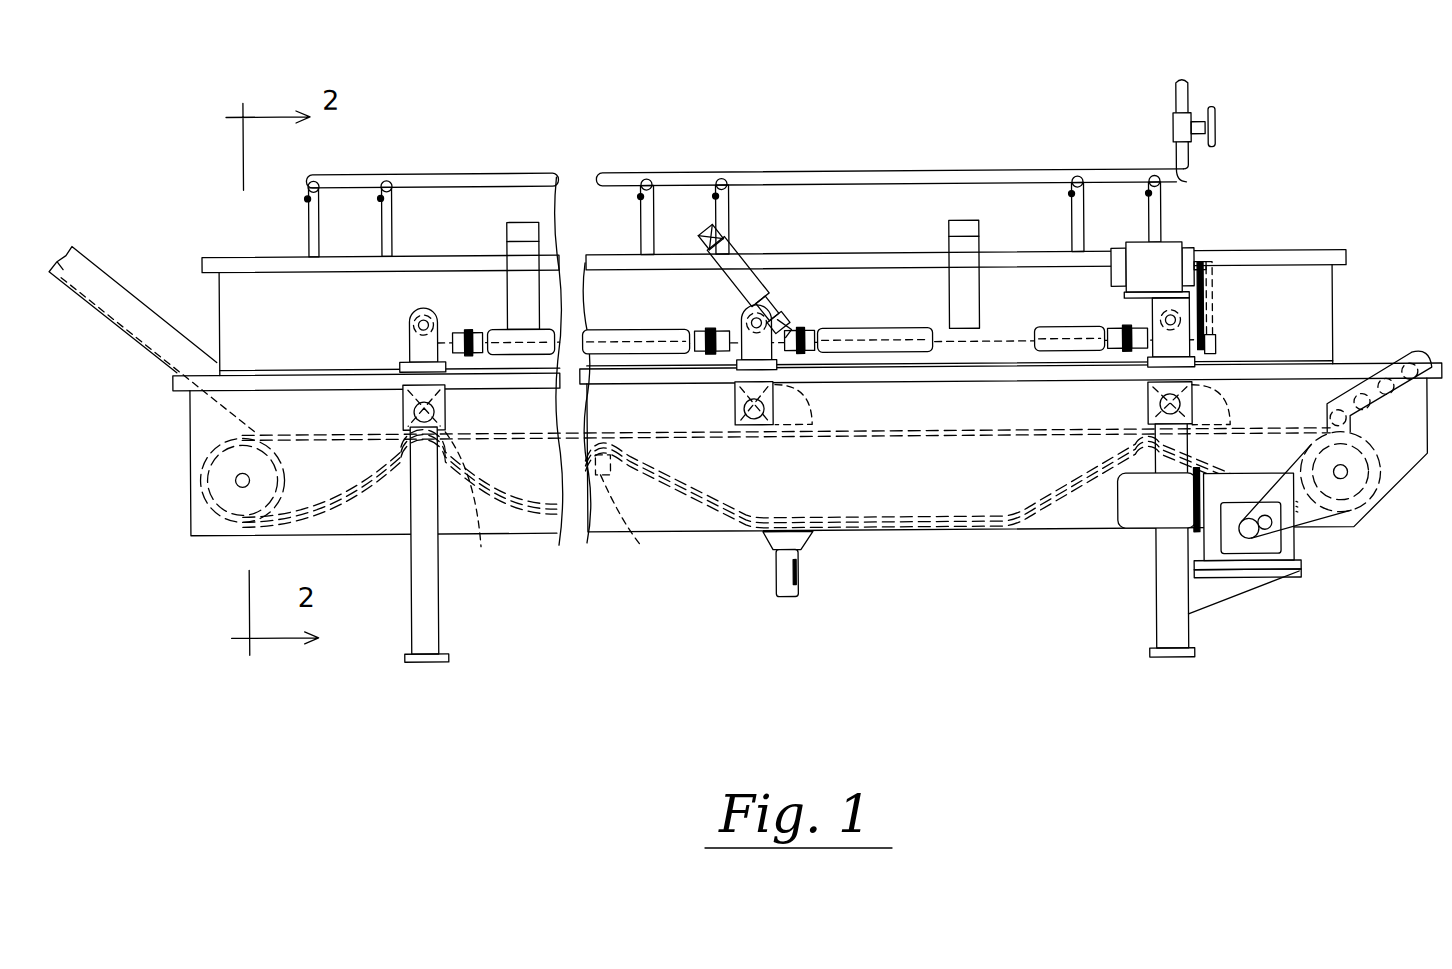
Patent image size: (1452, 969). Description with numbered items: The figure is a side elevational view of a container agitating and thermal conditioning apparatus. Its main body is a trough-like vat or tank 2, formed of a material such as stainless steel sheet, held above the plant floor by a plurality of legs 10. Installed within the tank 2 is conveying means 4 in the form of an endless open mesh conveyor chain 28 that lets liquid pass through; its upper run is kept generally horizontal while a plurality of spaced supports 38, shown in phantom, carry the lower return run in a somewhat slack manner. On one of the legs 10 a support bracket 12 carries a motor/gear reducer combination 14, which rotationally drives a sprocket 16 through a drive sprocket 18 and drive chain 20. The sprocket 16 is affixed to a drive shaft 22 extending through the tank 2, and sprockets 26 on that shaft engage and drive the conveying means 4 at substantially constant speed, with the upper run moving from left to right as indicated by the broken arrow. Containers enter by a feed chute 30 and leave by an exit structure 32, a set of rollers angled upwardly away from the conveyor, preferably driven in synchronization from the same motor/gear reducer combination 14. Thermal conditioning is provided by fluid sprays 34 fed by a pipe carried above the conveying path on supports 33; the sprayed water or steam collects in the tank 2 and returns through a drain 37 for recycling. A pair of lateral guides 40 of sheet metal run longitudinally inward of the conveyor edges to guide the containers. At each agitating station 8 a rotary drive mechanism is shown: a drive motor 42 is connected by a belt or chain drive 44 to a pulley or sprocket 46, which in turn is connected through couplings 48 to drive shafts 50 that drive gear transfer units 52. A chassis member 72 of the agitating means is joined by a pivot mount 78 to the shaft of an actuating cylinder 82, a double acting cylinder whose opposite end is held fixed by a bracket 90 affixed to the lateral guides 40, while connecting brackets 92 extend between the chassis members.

The tank 2 is at (185, 410).
The conveying means 4 is at (680, 498).
The agitating station 8 is at (722, 402).
The legs 10 is at (440, 625).
The support bracket 12 is at (1220, 604).
The motor/gear reducer combination 14 is at (1300, 545).
The sprocket 16 is at (1385, 452).
The drive sprocket 18 is at (1300, 576).
The drive chain 20 is at (1330, 516).
The drive shaft 22 is at (1343, 480).
The sprockets 26 is at (202, 490).
The conveyor chain 28 is at (931, 524).
The feed chute 30 is at (122, 270).
The exit structure 32 is at (1408, 355).
The supports 33 is at (308, 236).
The fluid sprays 34 is at (308, 186).
The drain 37 is at (800, 577).
The supports 38 is at (817, 473).
The lateral guides 40 is at (1337, 302).
The drive motor 42 is at (1150, 247).
The belt or chain drive 44 is at (1206, 275).
The pulley or sprocket 46 is at (1212, 325).
The couplings 48 is at (470, 352).
The drive shafts 50 is at (500, 327).
The gear transfer units 52 is at (410, 320).
The chassis member 72 is at (976, 368).
The pivot mount 78 is at (785, 318).
The actuating cylinder 82 is at (772, 272).
The bracket 90 is at (718, 223).
The connecting brackets 92 is at (510, 222).